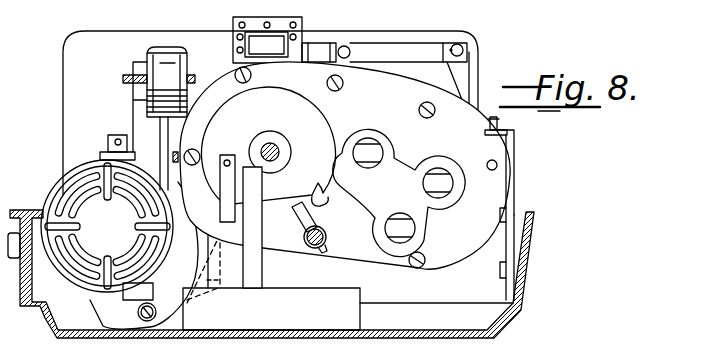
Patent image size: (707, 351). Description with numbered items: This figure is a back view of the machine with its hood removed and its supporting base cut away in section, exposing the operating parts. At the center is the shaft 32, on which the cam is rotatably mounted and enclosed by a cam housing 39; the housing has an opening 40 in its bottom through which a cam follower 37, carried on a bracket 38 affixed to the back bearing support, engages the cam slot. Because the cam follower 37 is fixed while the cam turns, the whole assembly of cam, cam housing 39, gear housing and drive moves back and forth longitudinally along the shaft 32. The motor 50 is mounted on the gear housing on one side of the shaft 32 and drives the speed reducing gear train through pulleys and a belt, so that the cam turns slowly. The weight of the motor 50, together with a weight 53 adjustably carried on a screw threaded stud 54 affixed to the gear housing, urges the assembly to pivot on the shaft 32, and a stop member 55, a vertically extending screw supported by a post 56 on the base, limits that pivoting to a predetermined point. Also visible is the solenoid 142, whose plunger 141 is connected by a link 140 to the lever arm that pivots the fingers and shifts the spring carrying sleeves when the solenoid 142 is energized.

The shaft 32 is at (278, 150).
The cam follower 37 is at (309, 219).
The bracket 38 is at (327, 238).
The cam housing 39 is at (312, 117).
The opening 40 is at (328, 201).
The motor 50 is at (68, 200).
The weight 53 is at (160, 54).
The screw threaded stud 54 is at (130, 75).
The stop member 55 is at (500, 128).
The post 56 is at (514, 190).
The link 140 is at (395, 22).
The plunger 141 is at (318, 48).
The solenoid 142 is at (233, 28).